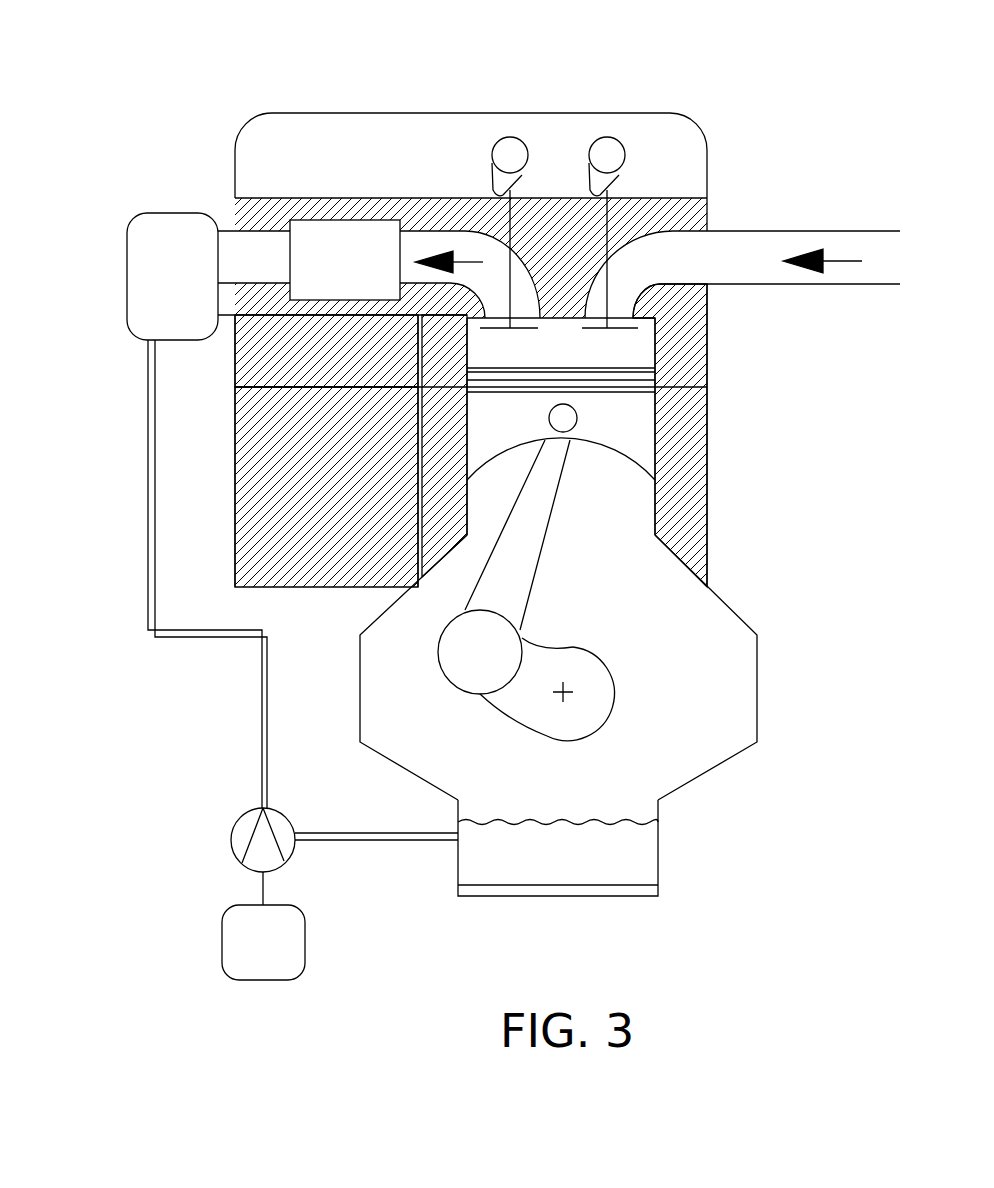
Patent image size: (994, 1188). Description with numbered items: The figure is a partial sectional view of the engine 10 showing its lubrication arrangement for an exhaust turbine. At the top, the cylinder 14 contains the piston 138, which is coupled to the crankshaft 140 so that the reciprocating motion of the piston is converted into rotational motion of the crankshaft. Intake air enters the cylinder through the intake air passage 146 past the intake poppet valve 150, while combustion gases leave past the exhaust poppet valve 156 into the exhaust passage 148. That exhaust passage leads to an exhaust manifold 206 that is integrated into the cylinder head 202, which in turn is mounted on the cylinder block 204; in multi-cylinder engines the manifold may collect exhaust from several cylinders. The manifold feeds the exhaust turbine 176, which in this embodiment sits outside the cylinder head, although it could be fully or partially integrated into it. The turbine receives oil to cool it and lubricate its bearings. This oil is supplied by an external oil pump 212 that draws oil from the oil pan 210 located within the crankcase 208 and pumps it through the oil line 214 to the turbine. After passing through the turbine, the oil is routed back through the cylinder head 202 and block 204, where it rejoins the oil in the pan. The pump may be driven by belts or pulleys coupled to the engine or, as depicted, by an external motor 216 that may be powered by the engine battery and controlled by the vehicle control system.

The engine 10 is at (788, 54).
The cylinder 14 is at (635, 342).
The piston 138 is at (637, 445).
The crankshaft 140 is at (442, 675).
The intake air passage 146 is at (860, 231).
The exhaust passage 148 is at (420, 230).
The intake poppet valve 150 is at (612, 205).
The exhaust poppet valve 156 is at (515, 205).
The exhaust turbine 176 is at (132, 337).
The cylinder head 202 is at (233, 364).
The cylinder block 204 is at (233, 487).
The exhaust manifold 206 is at (366, 271).
The crankcase 208 is at (586, 817).
The oil pan 210 is at (458, 852).
The external oil pump 212 is at (297, 852).
The oil line 214 is at (148, 538).
The external motor 216 is at (286, 956).